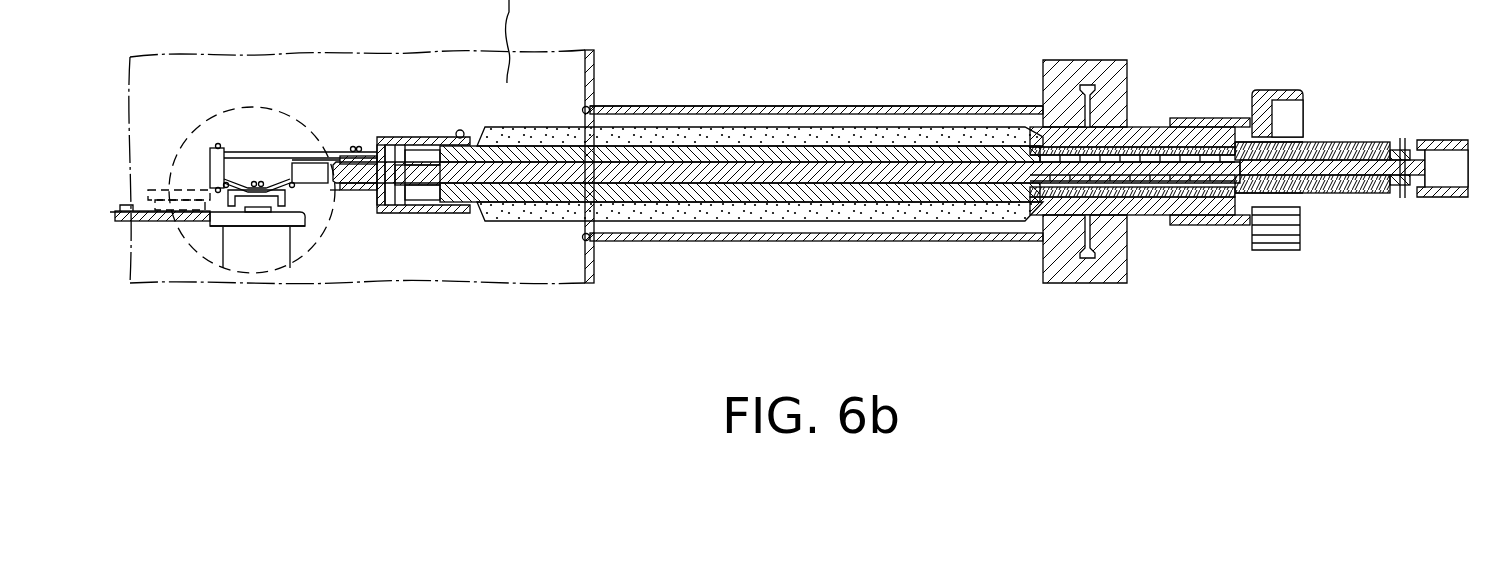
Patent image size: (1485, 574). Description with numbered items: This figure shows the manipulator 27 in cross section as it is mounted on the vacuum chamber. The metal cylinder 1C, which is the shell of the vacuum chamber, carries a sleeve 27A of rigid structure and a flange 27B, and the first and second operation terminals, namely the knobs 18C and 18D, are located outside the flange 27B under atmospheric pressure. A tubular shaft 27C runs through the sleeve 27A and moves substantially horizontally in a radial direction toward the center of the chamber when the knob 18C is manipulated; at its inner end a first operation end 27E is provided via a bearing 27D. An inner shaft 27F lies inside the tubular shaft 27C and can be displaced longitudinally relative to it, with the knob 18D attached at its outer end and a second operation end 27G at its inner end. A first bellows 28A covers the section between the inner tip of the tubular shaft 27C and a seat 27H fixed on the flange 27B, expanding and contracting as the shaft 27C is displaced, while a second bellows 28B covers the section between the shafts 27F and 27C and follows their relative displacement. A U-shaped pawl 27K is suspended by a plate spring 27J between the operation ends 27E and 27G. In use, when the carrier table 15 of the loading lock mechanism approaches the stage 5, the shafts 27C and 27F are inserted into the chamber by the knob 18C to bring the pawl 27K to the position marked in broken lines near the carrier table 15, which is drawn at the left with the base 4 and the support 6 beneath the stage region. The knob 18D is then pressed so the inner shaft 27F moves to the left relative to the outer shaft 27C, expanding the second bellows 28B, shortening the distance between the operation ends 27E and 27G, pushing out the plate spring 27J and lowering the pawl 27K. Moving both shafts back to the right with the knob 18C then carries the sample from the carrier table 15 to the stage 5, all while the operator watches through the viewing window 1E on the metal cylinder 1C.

The metal cylinder 1C is at (594, 64).
The viewing window 1E is at (190, 140).
The base 4 is at (268, 244).
The stage 5 is at (286, 206).
The support 6 is at (242, 231).
The carrier table 15 is at (163, 227).
The first operation terminal 18C is at (1252, 102).
The second operation terminal 18D is at (1430, 140).
The manipulator 27 is at (913, 104).
The sleeve 27A is at (733, 108).
The flange 27B is at (1043, 68).
The tubular shaft 27C is at (693, 195).
The bearing 27D is at (372, 203).
The first operation end 27E is at (278, 153).
The inner shaft 27F is at (878, 177).
The second operation end 27G is at (316, 178).
The seat 27H is at (1148, 127).
The plate spring 27J is at (238, 150).
The U-shaped pawl 27K is at (331, 185).
The first bellows 28A is at (662, 140).
The second bellows 28B is at (418, 134).